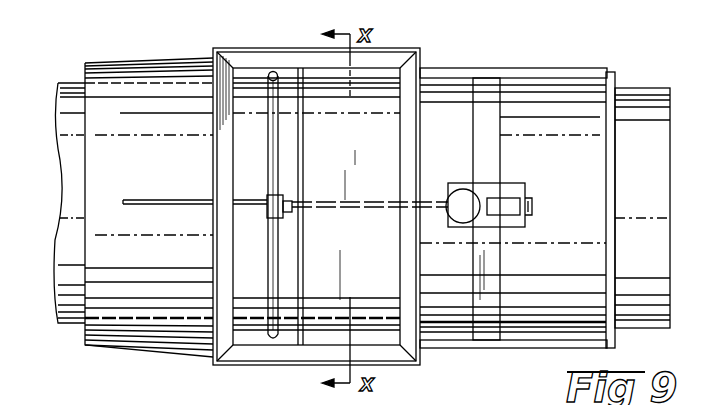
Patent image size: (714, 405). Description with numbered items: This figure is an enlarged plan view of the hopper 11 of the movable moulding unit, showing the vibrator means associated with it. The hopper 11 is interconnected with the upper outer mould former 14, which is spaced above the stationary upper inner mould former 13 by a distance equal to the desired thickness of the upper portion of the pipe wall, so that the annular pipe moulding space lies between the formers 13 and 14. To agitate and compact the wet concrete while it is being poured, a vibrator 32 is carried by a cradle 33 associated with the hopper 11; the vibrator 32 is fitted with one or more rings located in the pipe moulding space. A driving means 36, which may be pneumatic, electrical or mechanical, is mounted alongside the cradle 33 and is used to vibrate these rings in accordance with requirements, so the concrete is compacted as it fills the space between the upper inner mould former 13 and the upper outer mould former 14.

The hopper 11 is at (328, 132).
The upper inner mould former 13 is at (73, 170).
The upper outer mould former 14 is at (108, 117).
The vibrator 32 is at (260, 160).
The cradle 33 is at (495, 113).
The driving means 36 is at (502, 203).